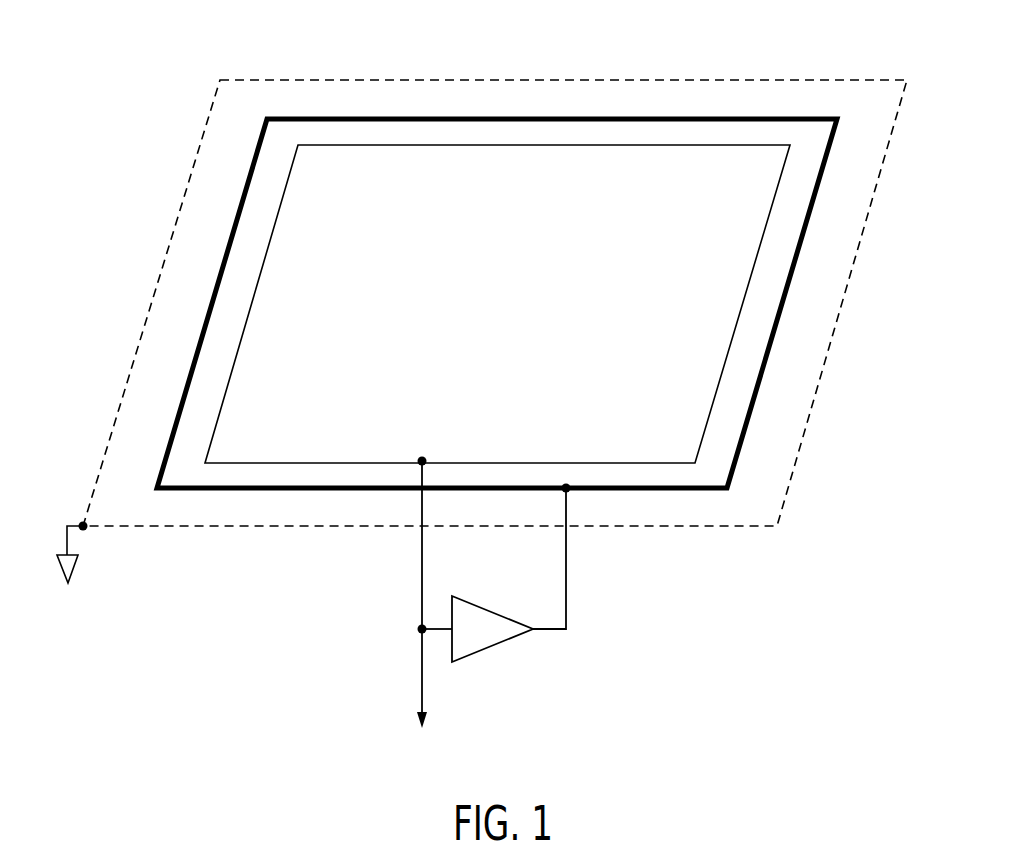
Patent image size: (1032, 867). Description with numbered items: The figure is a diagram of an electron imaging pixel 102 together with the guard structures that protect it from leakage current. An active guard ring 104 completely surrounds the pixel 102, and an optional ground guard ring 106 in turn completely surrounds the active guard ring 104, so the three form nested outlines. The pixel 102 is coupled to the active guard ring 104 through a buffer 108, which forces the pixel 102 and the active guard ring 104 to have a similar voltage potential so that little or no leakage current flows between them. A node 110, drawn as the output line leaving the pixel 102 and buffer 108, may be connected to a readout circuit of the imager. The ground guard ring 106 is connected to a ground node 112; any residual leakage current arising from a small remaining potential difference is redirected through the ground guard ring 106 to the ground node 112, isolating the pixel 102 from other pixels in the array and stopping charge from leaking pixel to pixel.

The pixel 102 is at (712, 130).
The active guard ring 104 is at (796, 285).
The ground guard ring 106 is at (284, 70).
The buffer 108 is at (500, 598).
The node 110 is at (426, 697).
The ground node 112 is at (79, 568).